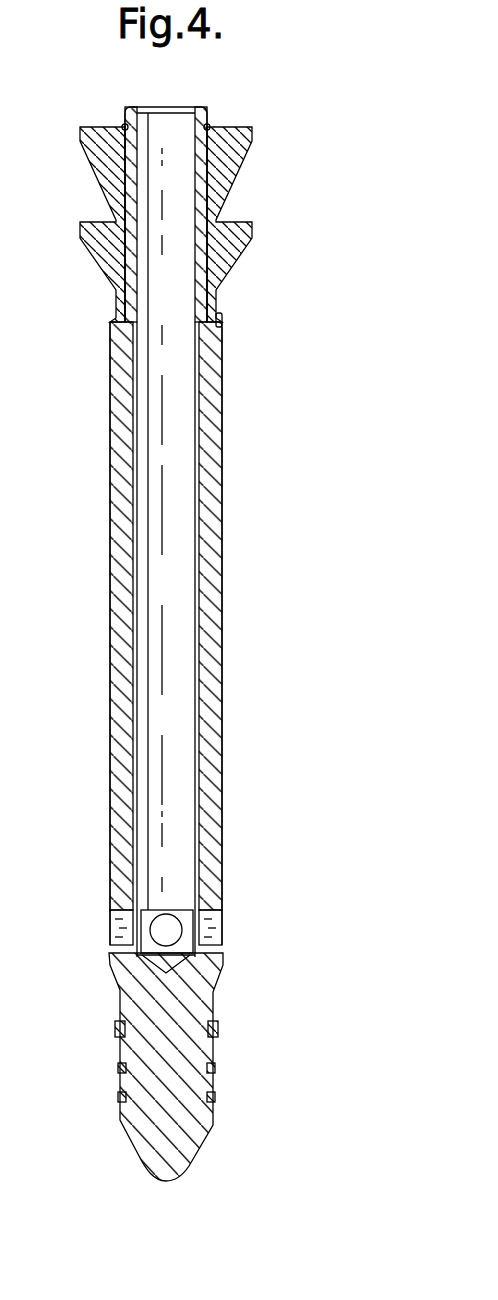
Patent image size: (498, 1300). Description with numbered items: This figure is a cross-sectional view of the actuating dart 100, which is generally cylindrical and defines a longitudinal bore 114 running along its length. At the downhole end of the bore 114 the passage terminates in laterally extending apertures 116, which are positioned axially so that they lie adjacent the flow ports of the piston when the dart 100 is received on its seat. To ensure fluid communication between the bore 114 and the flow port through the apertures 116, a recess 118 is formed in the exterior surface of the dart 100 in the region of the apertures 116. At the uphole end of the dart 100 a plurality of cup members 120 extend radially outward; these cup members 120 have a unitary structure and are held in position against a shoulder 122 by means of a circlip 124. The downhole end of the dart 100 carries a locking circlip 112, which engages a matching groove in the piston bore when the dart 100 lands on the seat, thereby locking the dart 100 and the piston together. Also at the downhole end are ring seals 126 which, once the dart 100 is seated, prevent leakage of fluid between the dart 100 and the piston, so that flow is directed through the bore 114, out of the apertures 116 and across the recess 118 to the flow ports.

The actuating dart 100 is at (103, 637).
The locking circlip 112 is at (220, 1022).
The longitudinal bore 114 is at (182, 552).
The laterally extending apertures 116 is at (118, 929).
The recess 118 is at (224, 952).
The cup members 120 is at (265, 162).
The shoulder 122 is at (223, 330).
The circlip 124 is at (211, 127).
The ring seals 126 is at (216, 1097).